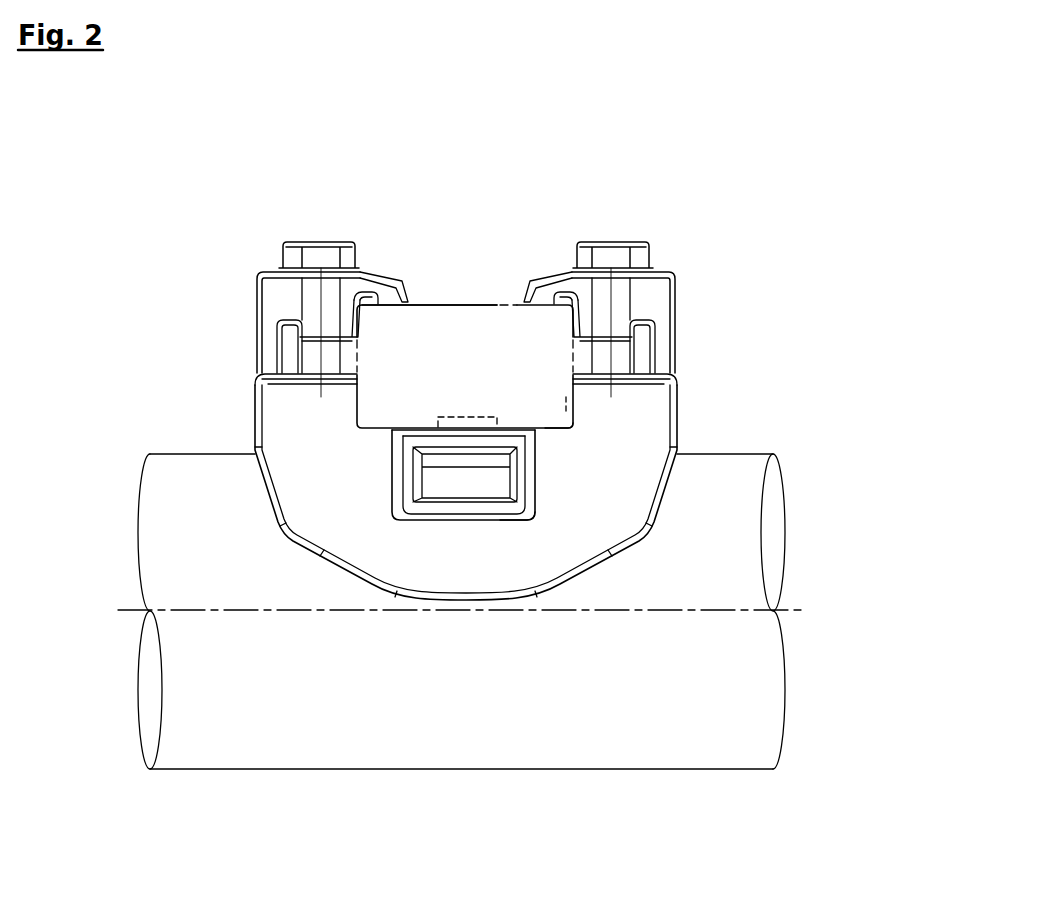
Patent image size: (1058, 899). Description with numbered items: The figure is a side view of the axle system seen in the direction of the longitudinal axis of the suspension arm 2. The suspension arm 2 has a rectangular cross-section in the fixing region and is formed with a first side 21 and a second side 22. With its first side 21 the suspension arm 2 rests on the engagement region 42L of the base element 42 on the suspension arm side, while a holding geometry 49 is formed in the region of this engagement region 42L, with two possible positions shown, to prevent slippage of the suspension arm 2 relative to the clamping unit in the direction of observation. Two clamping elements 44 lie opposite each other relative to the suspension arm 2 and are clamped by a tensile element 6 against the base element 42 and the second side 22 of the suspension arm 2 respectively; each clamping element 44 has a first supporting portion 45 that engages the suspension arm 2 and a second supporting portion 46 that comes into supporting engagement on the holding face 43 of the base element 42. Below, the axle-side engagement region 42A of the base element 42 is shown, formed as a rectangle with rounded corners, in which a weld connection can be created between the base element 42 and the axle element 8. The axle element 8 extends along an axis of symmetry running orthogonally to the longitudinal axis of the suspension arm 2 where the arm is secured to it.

The suspension arm 2 is at (463, 318).
The tensile element 6 is at (622, 356).
The axle element 8 is at (773, 507).
The first side 21 is at (387, 428).
The second side 22 is at (437, 305).
The base element 42 is at (279, 531).
The axle-side engagement region 42A is at (508, 498).
The engagement region on the suspension arm side 42L is at (563, 430).
The holding face 43 is at (273, 388).
The clamping element 44 is at (273, 293).
The first supporting portion 45 is at (398, 303).
The second supporting portion 46 is at (273, 374).
The holding geometry 49 is at (537, 426).